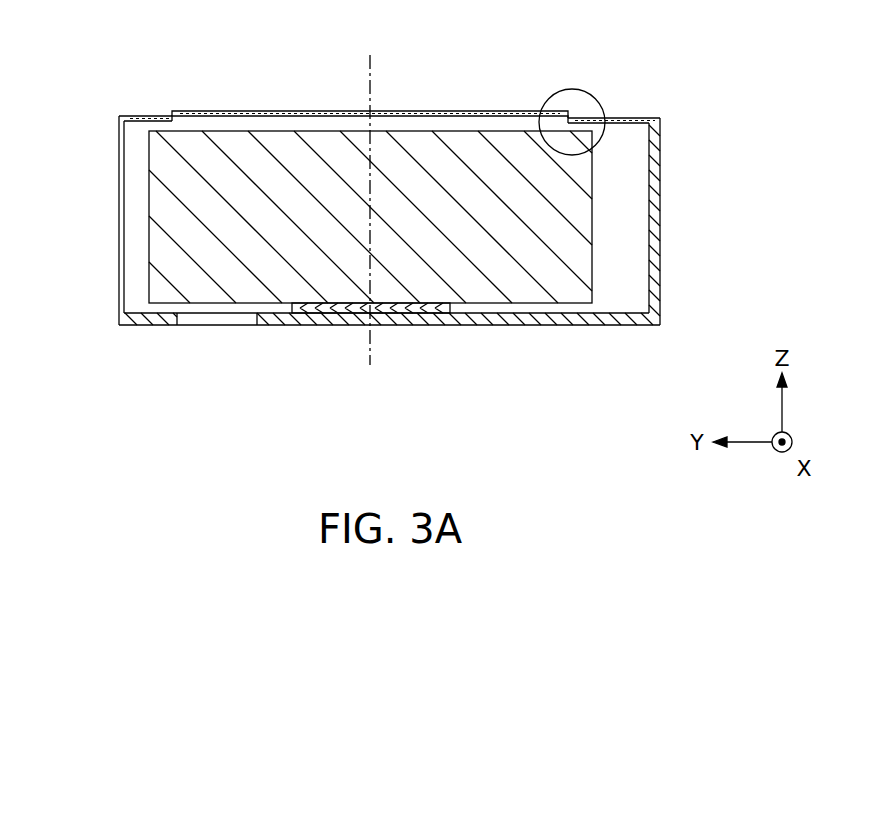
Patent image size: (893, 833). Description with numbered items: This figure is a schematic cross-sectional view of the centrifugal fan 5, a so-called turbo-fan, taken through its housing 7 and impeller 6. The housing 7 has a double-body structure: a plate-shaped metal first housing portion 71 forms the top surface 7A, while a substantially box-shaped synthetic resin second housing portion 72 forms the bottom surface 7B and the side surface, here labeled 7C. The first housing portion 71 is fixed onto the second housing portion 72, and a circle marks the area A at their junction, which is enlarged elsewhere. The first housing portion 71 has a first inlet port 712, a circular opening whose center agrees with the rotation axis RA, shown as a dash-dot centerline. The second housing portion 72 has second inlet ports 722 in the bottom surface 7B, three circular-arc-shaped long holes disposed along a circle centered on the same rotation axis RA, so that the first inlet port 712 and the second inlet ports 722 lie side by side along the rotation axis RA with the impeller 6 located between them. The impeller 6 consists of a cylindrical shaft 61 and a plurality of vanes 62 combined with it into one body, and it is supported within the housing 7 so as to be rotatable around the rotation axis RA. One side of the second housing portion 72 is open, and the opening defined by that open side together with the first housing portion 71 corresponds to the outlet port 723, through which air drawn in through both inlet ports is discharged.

The centrifugal fan 5 is at (668, 66).
The housing 7 is at (738, 97).
The first housing portion 71 is at (641, 117).
The first inlet port 712 is at (226, 111).
The top surface 7A is at (626, 117).
The second housing portion 72 is at (661, 165).
The outlet port 723 is at (118, 274).
The second inlet ports 722 is at (177, 326).
The bottom surface 7B is at (620, 326).
The side surface 7C is at (661, 260).
The impeller 6 is at (515, 388).
The cylindrical shaft 61 is at (417, 314).
The vanes 62 is at (497, 293).
The area A is at (564, 90).
The rotation axis RA is at (374, 78).